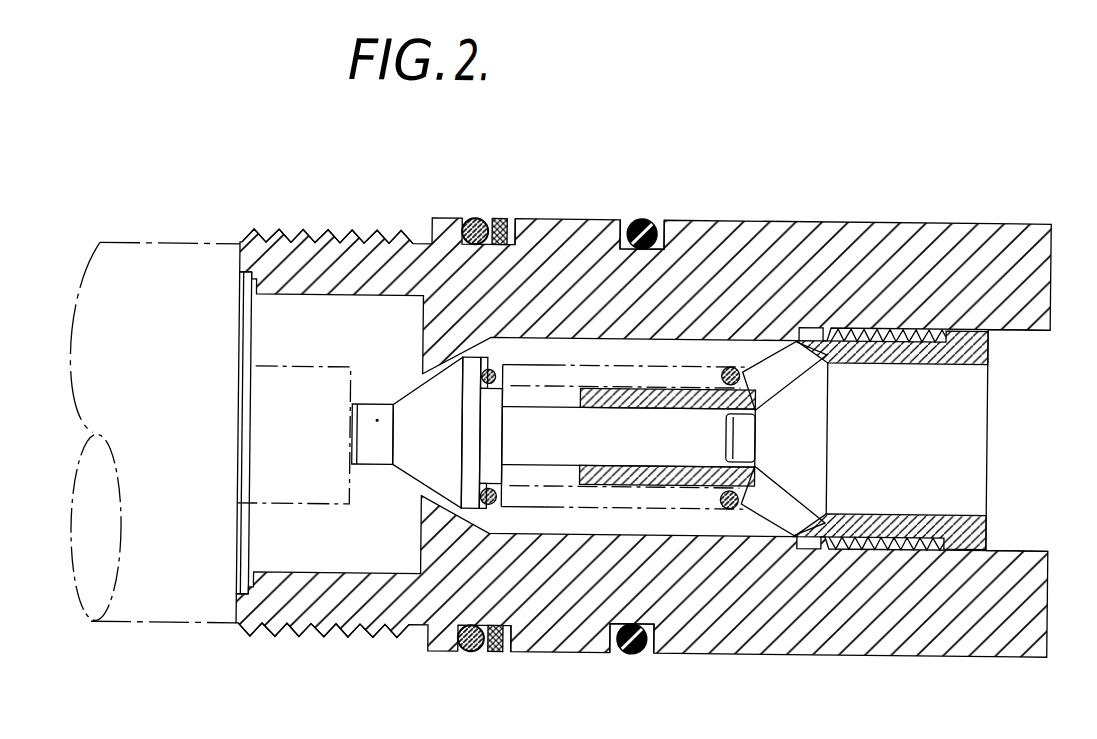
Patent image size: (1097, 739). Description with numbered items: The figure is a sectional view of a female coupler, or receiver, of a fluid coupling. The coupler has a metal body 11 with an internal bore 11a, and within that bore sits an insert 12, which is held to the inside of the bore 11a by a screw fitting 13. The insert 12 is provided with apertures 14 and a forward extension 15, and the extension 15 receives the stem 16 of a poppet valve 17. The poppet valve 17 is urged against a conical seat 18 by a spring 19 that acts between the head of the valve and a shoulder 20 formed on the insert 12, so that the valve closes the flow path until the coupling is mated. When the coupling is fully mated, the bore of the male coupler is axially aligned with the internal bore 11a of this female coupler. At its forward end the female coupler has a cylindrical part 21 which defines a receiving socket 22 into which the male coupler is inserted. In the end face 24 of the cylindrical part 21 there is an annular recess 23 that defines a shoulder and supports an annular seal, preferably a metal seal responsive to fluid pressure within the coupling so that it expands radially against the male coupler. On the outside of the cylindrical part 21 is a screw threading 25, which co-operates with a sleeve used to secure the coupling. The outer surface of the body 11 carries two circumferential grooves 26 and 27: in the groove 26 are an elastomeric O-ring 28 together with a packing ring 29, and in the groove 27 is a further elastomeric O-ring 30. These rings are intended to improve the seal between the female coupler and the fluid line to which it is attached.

The metal body 11 is at (895, 220).
The internal bore 11a is at (1014, 505).
The insert 12 is at (958, 326).
The screw fitting 13 is at (888, 548).
The apertures 14 is at (764, 512).
The forward extension 15 is at (703, 480).
The stem 16 is at (557, 444).
The poppet valve 17 is at (442, 449).
The conical seat 18 is at (492, 513).
The spring 19 is at (670, 511).
The shoulder 20 is at (736, 364).
The cylindrical part 21 is at (250, 587).
The receiving socket 22 is at (339, 541).
The annular recess 23 is at (237, 587).
The end face 24 is at (240, 590).
The screw threading 25 is at (310, 236).
The circumferential groove 26 is at (512, 222).
The circumferential groove 27 is at (663, 224).
The elastomeric O-ring 28 is at (474, 223).
The packing ring 29 is at (494, 221).
The elastomeric O-ring 30 is at (635, 219).